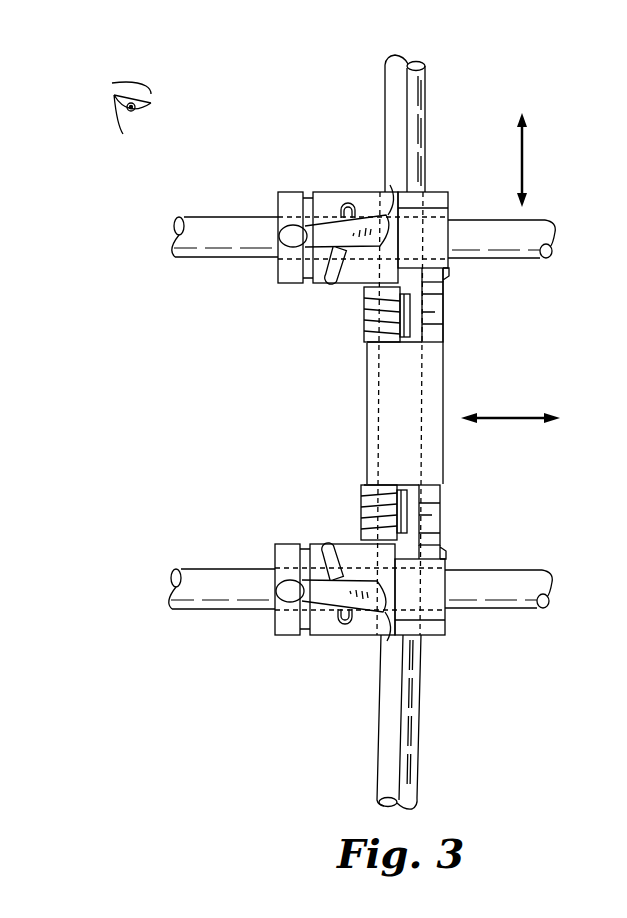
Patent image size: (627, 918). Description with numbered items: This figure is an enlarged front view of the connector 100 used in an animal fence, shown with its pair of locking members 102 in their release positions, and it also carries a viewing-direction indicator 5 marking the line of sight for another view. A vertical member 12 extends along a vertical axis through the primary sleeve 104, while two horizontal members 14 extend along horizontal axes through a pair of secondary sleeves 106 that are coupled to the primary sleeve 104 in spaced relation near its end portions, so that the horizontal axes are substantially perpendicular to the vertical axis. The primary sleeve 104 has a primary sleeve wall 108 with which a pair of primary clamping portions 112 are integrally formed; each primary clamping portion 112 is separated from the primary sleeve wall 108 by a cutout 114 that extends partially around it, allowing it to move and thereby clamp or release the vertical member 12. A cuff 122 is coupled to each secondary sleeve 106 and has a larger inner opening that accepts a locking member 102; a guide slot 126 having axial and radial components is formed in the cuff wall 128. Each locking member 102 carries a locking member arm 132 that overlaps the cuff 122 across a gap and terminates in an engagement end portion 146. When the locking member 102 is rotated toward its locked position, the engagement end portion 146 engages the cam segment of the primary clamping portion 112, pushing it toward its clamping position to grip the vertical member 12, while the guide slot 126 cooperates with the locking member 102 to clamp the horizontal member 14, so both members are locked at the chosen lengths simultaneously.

The viewing direction of FIG. 5 is at (142, 119).
The connector 100 is at (278, 130).
The vertical member 12 is at (425, 77).
The horizontal members 14 is at (525, 259).
The locking member 102 is at (277, 287).
The primary sleeve 104 is at (444, 455).
The secondary sleeve 106 is at (443, 185).
The primary sleeve wall 108 is at (385, 418).
The primary clamping portion 112 is at (367, 322).
The cutout 114 is at (413, 316).
The cuff 122 is at (353, 192).
The guide slot 126 is at (334, 282).
The cuff wall 128 is at (333, 192).
The locking member arm 132 is at (342, 235).
The engagement end portion 146 is at (392, 186).